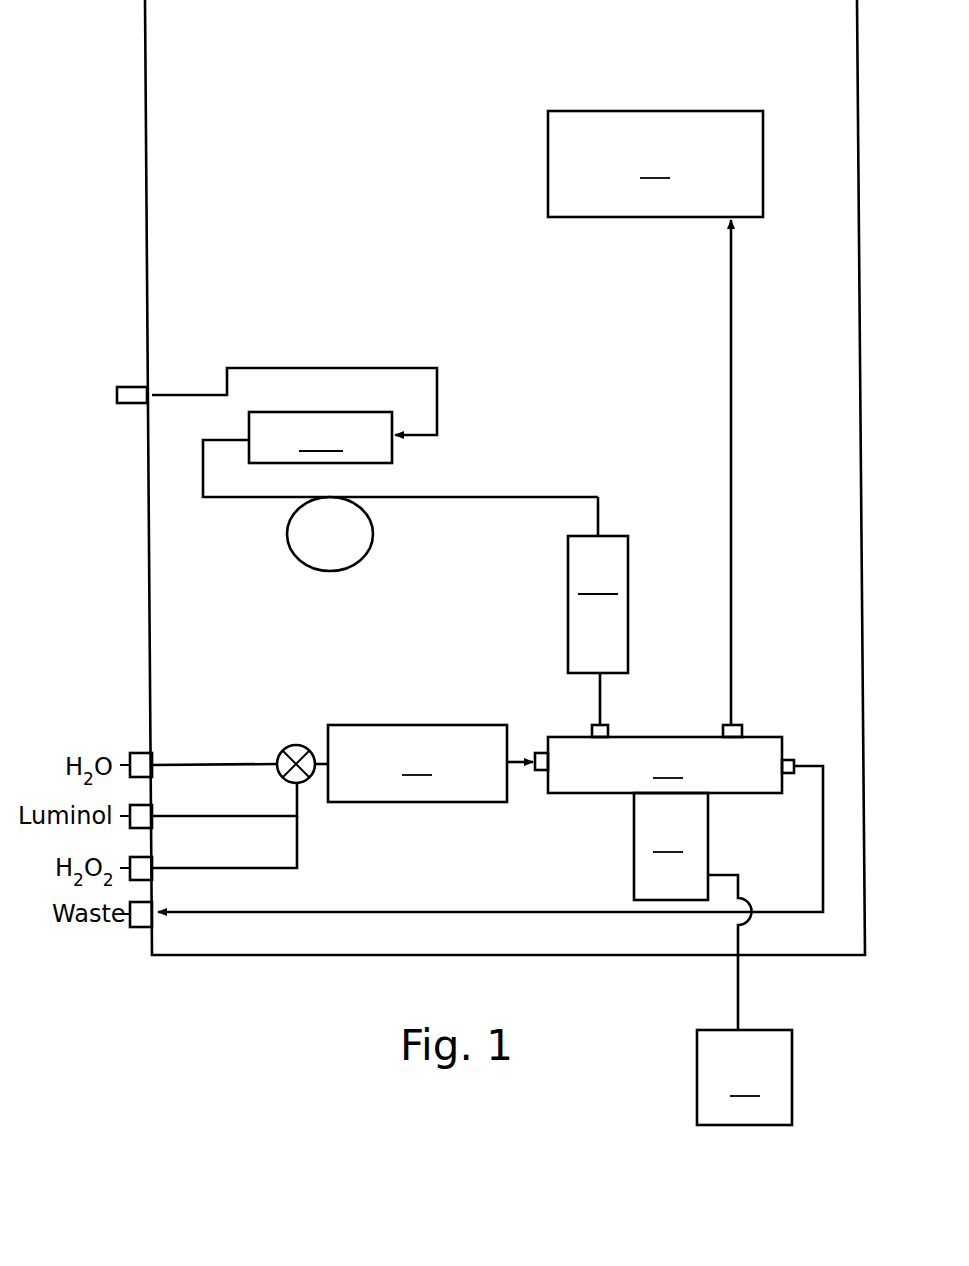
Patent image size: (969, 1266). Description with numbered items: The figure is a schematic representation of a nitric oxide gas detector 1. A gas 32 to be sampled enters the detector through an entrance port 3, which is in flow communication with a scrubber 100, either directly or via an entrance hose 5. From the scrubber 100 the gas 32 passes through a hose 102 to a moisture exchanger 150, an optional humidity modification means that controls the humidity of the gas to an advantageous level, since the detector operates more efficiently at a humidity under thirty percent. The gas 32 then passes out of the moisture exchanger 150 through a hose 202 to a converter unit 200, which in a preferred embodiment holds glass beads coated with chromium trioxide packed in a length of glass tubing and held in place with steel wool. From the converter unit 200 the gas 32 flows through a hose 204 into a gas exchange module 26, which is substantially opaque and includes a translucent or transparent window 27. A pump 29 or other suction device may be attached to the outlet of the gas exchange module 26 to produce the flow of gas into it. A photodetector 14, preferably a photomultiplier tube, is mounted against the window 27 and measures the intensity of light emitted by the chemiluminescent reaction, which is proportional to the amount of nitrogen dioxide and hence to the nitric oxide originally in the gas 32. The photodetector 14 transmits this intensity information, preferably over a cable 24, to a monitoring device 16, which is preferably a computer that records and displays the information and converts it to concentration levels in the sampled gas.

The nitric oxide gas detector 1 is at (112, 104).
The entrance port 3 is at (135, 404).
The gas 32 is at (103, 398).
The entrance hose 5 is at (332, 368).
The scrubber 100 is at (320, 437).
The hose 102 is at (232, 497).
The moisture exchanger 150 is at (380, 527).
The hose 202 is at (530, 496).
The converter unit 200 is at (598, 604).
The hose 204 is at (601, 705).
The pump 29 is at (655, 424).
The window 27 is at (430, 763).
The gas exchange module 26 is at (664, 765).
The photodetector 14 is at (671, 846).
The cable 24 is at (740, 990).
The monitoring device 16 is at (744, 1077).